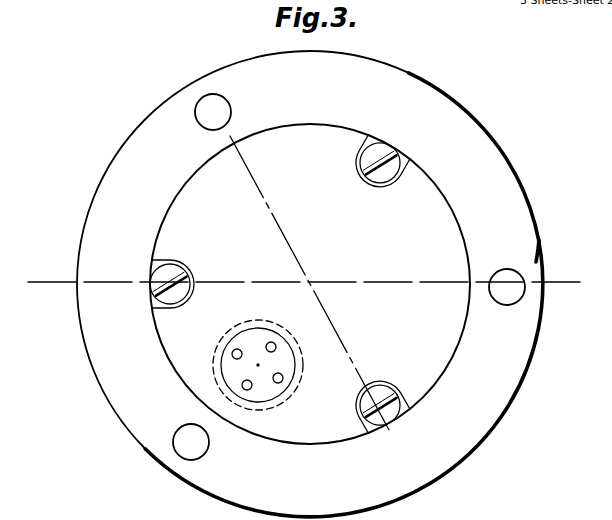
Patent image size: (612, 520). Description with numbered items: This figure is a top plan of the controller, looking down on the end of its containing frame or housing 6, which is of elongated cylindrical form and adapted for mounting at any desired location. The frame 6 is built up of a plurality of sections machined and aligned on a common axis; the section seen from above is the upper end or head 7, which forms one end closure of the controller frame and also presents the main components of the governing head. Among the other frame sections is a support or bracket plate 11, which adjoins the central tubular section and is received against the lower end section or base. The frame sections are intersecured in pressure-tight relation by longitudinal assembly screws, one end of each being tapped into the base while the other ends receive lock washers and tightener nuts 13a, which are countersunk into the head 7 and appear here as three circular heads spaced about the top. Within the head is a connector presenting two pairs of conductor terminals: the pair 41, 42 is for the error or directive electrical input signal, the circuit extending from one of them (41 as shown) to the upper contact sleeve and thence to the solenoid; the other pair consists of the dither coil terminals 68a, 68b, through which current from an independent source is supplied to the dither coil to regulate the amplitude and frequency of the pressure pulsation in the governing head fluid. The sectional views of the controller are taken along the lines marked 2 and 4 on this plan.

The section line 2- 2 is at (28, 262).
The section line 4- 4 is at (230, 136).
The containing frame or housing 6 is at (503, 140).
The upper end or head 7 is at (460, 242).
The support or bracket plate 11 is at (528, 242).
The tightener nuts 13a is at (178, 305).
The conductor terminal 41 is at (247, 390).
The conductor terminal 42 is at (281, 381).
The dither coil terminal 68a is at (237, 349).
The dither coil terminal 68b is at (271, 342).